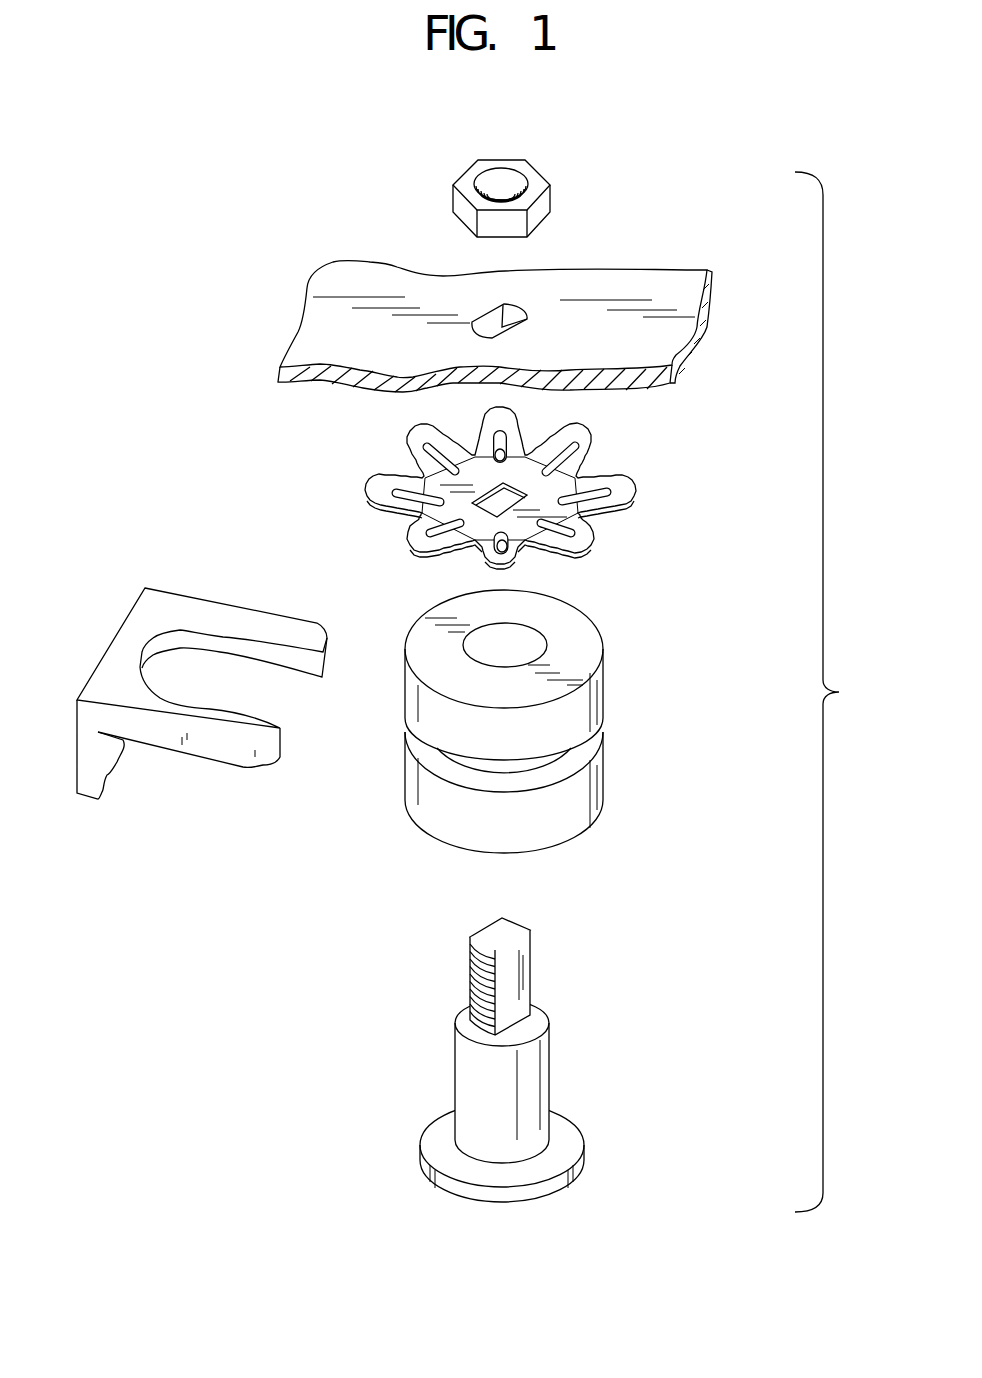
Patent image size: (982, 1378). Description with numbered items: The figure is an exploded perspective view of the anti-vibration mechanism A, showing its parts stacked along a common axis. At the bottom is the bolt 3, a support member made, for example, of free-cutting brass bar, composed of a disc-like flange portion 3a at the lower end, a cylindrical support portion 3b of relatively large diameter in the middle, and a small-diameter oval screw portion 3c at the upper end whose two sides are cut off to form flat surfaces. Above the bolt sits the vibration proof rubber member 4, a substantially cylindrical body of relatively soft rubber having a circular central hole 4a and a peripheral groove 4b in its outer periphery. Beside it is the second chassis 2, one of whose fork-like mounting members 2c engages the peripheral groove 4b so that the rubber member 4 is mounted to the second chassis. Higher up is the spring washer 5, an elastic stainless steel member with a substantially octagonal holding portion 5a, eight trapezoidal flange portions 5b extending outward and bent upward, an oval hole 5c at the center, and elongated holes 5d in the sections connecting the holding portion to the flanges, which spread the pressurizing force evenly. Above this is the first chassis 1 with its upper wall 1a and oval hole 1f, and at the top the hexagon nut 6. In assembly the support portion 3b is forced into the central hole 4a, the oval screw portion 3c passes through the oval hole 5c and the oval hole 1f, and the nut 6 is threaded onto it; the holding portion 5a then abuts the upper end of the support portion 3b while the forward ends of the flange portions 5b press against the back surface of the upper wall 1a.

The first chassis 1 is at (519, 300).
The upper wall of the first chassis 1a is at (678, 333).
The oval hole of the first chassis 1f is at (493, 316).
The second chassis 2 is at (203, 711).
The fork-like mounting member 2c is at (300, 635).
The bolt 3 is at (522, 1060).
The flange portion 3a is at (562, 1157).
The support portion 3b is at (480, 1078).
The oval screw portion 3c is at (470, 970).
The vibration proof rubber member 4 is at (557, 721).
The central hole 4a is at (530, 638).
The peripheral groove 4b is at (585, 753).
The spring washer 5 is at (498, 498).
The holding portion 5a is at (417, 518).
The flange portion 5b is at (410, 438).
The oval hole 5c is at (500, 503).
The elongated hole 5d is at (563, 453).
The hexagon nut 6 is at (575, 168).
The anti-vibration mechanism A is at (864, 704).